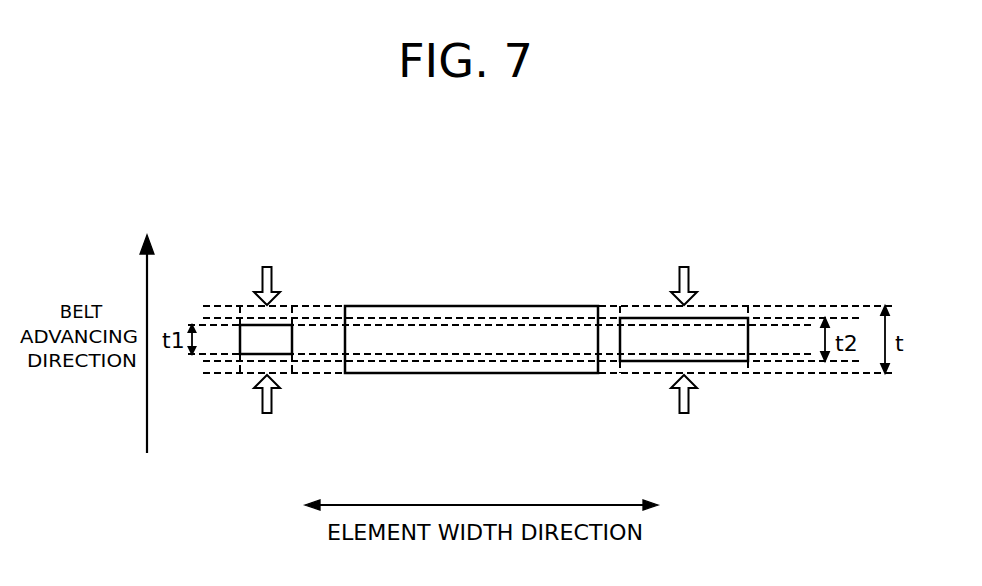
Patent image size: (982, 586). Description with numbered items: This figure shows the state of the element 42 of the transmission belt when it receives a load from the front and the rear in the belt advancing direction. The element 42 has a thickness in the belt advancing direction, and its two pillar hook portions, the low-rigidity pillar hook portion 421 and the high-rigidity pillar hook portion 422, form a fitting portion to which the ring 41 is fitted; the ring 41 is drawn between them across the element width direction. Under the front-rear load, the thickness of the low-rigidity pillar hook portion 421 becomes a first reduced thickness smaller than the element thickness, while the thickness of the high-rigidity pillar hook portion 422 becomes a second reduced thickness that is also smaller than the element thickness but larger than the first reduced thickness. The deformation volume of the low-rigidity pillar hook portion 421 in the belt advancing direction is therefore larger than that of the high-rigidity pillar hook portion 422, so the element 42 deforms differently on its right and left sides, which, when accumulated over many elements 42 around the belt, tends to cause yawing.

The element 42 is at (412, 240).
The ring 41 is at (463, 333).
The low-rigidity pillar hook portion 421 is at (247, 304).
The high-rigidity pillar hook portion 422 is at (663, 317).